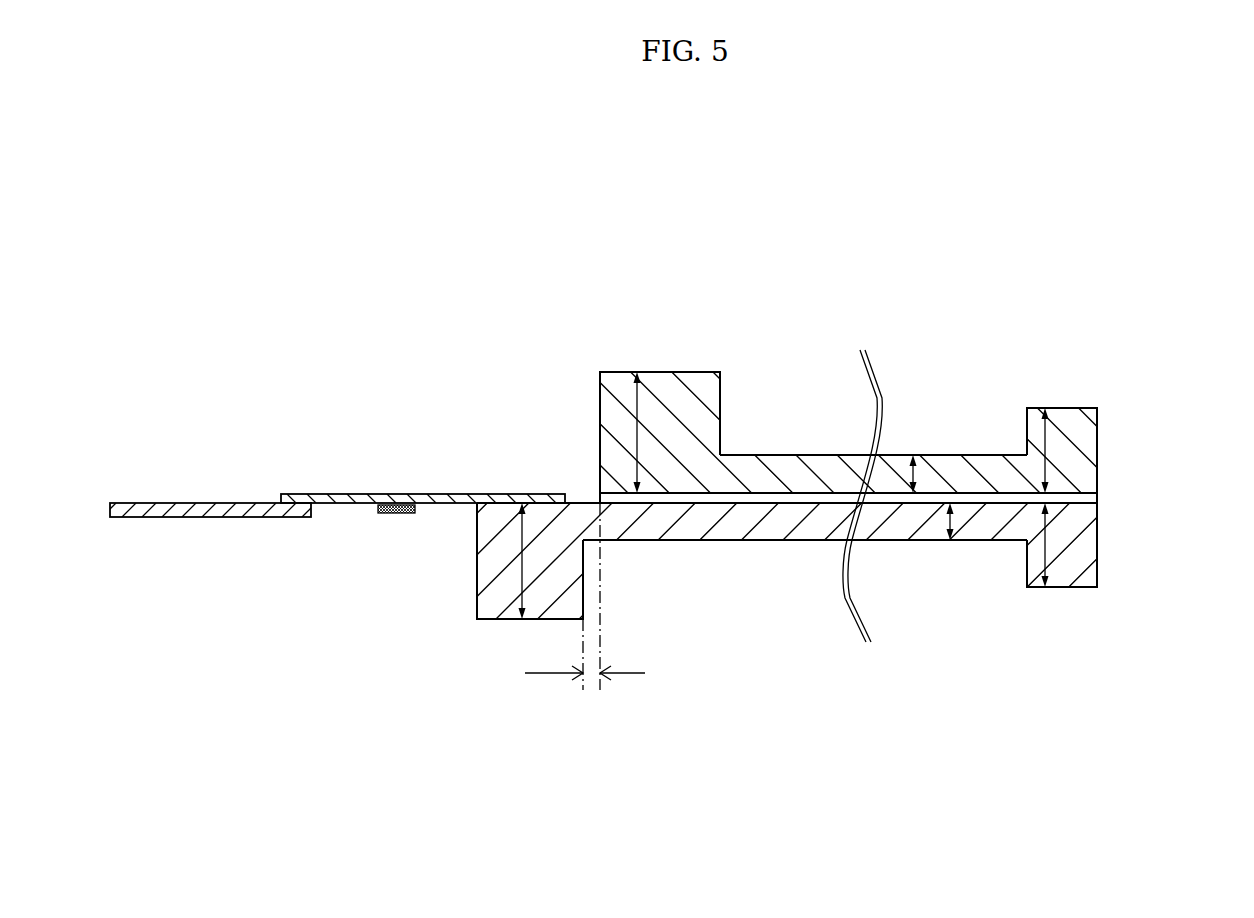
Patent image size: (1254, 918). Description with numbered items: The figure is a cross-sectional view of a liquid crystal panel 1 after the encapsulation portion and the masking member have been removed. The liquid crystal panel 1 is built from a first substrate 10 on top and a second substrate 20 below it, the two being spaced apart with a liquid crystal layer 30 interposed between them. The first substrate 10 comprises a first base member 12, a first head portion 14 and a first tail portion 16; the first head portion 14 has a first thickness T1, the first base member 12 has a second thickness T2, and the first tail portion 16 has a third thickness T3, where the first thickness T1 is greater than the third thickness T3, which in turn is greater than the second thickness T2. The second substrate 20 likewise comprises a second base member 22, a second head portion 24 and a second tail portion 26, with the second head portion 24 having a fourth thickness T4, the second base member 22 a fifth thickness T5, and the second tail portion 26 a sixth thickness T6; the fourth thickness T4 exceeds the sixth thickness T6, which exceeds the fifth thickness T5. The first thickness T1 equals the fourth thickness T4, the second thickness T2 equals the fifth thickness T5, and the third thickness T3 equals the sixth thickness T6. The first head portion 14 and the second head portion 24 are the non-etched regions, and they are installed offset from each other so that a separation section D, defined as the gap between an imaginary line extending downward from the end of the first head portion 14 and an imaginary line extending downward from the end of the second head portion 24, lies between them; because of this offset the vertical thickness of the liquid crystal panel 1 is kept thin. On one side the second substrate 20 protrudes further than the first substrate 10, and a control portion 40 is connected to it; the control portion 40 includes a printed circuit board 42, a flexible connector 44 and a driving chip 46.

The liquid crystal panel 1 is at (953, 228).
The first substrate 10 is at (835, 365).
The first base member 12 is at (788, 462).
The first head portion 14 is at (688, 385).
The first tail portion 16 is at (1078, 422).
The second substrate 20 is at (783, 633).
The second base member 22 is at (765, 532).
The second head portion 24 is at (493, 604).
The second tail portion 26 is at (1065, 582).
The liquid crystal layer 30 is at (1077, 498).
The control portion 40 is at (262, 408).
The printed circuit board 42 is at (158, 515).
The flexible connector 44 is at (340, 494).
The driving chip 46 is at (392, 515).
The first thickness T1 is at (632, 438).
The second thickness T2 is at (914, 476).
The third thickness T3 is at (1020, 420).
The fourth thickness T4 is at (512, 552).
The fifth thickness T5 is at (935, 532).
The sixth thickness T6 is at (1027, 562).
The separation section D is at (585, 614).